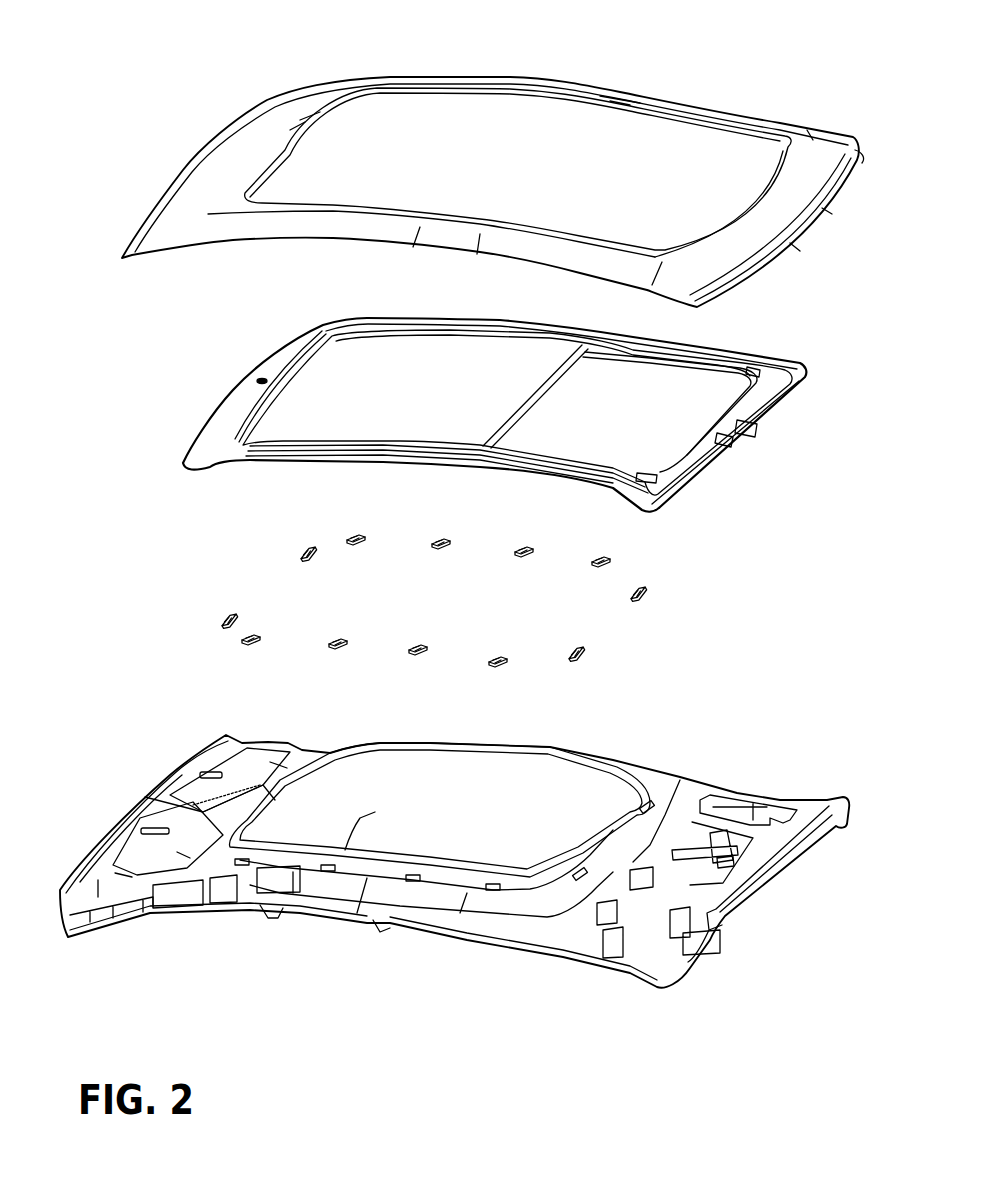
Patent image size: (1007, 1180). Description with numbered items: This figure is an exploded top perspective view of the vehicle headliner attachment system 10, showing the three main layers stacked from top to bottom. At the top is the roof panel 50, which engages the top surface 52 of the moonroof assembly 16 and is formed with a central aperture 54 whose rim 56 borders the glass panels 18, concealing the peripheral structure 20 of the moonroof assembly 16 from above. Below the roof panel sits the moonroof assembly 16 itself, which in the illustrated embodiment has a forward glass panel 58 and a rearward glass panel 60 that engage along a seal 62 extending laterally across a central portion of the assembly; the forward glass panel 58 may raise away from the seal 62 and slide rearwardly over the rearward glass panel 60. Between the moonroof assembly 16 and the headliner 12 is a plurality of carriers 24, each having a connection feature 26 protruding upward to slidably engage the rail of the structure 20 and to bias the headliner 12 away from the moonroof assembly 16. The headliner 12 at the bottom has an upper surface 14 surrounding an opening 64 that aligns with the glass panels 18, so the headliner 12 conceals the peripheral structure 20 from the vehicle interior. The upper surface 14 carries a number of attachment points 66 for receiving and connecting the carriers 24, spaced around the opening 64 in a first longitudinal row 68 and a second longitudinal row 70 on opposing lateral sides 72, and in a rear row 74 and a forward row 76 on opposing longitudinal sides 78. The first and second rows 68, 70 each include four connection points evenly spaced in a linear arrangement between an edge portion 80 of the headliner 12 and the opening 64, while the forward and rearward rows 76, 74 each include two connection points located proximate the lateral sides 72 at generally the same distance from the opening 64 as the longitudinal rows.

The vehicle headliner attachment system 10 is at (120, 334).
The headliner 12 is at (454, 841).
The upper surface 14 is at (278, 882).
The moonroof assembly 16 is at (205, 415).
The glass panel 18 is at (668, 392).
The structure 20 is at (385, 477).
The carriers 24 is at (570, 655).
The connection feature 26 is at (325, 641).
The roof panel 50 is at (215, 135).
The top surface 52 is at (292, 351).
The central aperture 54 is at (422, 120).
The rim 56 is at (620, 100).
The forward glass panel 58 is at (394, 407).
The rearward glass panel 60 is at (595, 420).
The seal 62 is at (540, 390).
The opening 64 is at (452, 850).
The attachment points 66 is at (345, 850).
The first longitudinal row 68 is at (330, 866).
The second longitudinal row 70 is at (420, 742).
The lateral sides 72 is at (472, 768).
The rear row 74 is at (682, 780).
The forward row 76 is at (220, 840).
The longitudinal sides 78 is at (285, 796).
The edge portion 80 is at (212, 892).